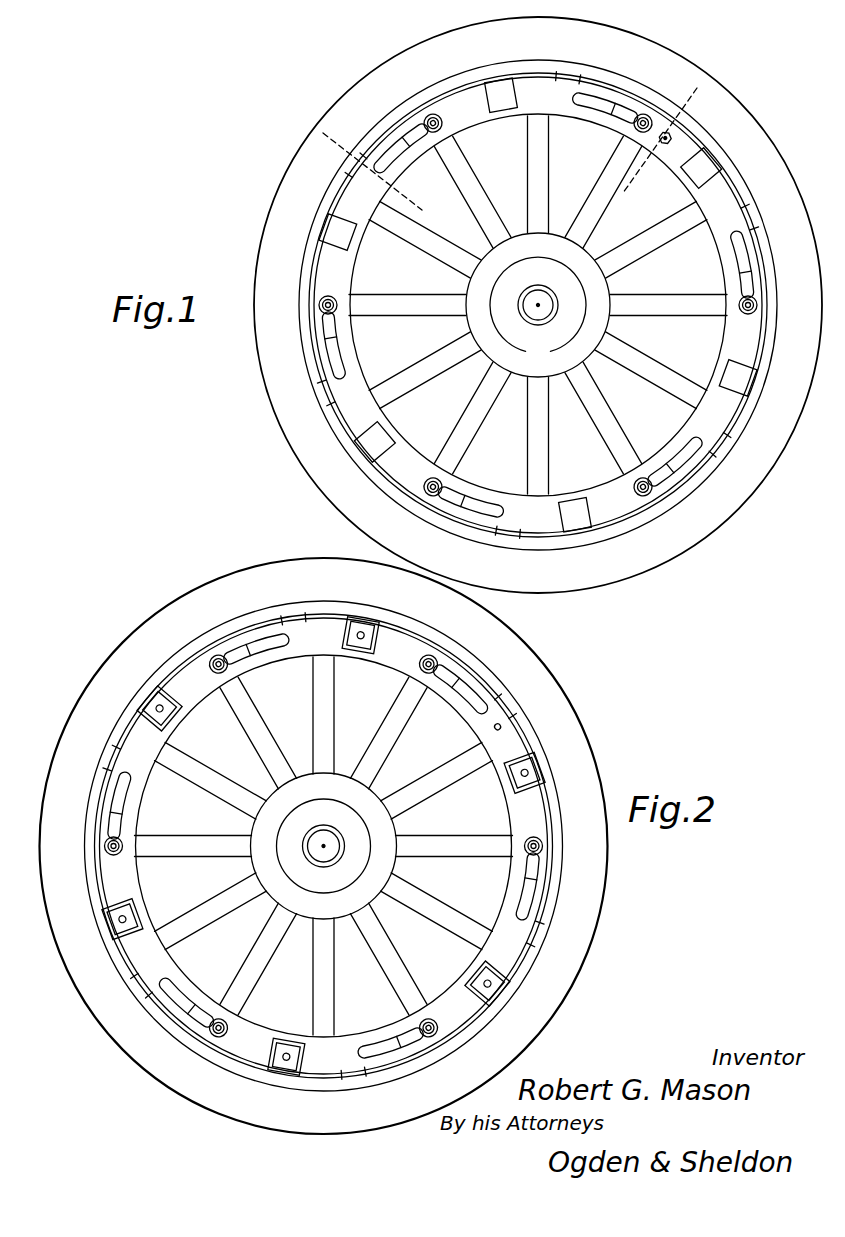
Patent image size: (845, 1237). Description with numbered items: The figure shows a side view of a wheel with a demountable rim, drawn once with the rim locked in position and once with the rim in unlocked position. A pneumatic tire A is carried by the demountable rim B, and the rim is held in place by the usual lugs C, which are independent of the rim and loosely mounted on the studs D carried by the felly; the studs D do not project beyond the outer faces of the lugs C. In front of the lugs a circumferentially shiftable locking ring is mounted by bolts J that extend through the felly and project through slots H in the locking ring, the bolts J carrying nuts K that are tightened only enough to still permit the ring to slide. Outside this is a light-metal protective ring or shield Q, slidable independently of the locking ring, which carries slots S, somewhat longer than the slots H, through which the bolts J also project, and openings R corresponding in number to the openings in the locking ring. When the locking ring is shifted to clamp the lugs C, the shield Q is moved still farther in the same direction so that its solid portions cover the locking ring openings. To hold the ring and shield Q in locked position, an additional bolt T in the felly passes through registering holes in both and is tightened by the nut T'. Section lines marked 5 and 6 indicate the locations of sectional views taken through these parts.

In FIG. 1, the pneumatic tire A is at (657, 553).
In FIG. 2, the pneumatic tire A is at (575, 720).
In FIG. 1, the demountable rim B is at (735, 440).
In FIG. 2, the demountable rim B is at (553, 788).
In FIG. 1, the lugs C is at (363, 417).
In FIG. 2, the lugs C is at (157, 698).
In FIG. 2, the studs D is at (156, 706).
In FIG. 1, the slots H is at (326, 320).
In FIG. 2, the slots H is at (533, 863).
In FIG. 2, the bolts J is at (221, 660).
In FIG. 2, the nuts K is at (226, 656).
In FIG. 1, the protective ring or shield Q is at (370, 442).
In FIG. 2, the protective ring or shield Q is at (193, 682).
In FIG. 1, the openings R is at (337, 232).
In FIG. 2, the openings R is at (497, 967).
In FIG. 1, the slots S is at (393, 153).
In FIG. 2, the slots S is at (266, 640).
In FIG. 1, the bolt T is at (617, 153).
In FIG. 2, the bolt T is at (456, 739).
In FIG. 1, the nut T' is at (726, 117).
In FIG. 1, the section line 5- 5 is at (339, 129).
In FIG. 1, the section line 6- 6 is at (712, 103).